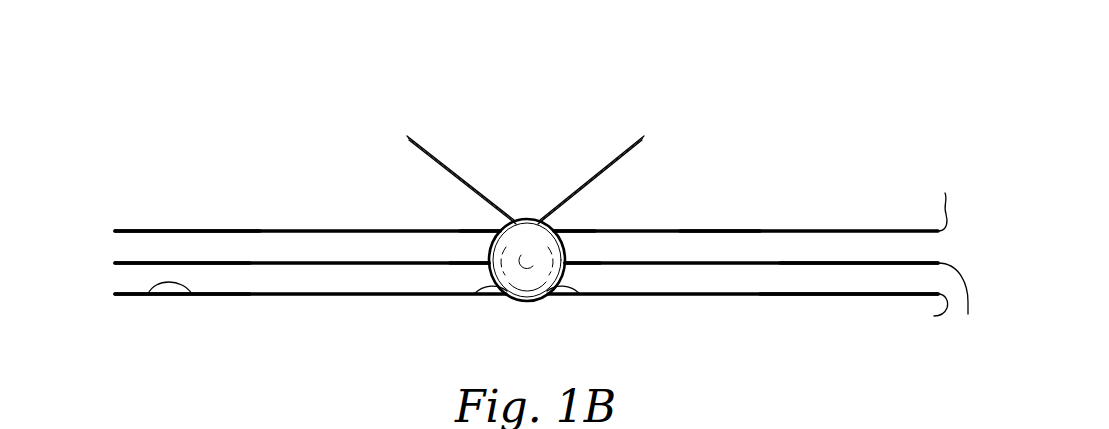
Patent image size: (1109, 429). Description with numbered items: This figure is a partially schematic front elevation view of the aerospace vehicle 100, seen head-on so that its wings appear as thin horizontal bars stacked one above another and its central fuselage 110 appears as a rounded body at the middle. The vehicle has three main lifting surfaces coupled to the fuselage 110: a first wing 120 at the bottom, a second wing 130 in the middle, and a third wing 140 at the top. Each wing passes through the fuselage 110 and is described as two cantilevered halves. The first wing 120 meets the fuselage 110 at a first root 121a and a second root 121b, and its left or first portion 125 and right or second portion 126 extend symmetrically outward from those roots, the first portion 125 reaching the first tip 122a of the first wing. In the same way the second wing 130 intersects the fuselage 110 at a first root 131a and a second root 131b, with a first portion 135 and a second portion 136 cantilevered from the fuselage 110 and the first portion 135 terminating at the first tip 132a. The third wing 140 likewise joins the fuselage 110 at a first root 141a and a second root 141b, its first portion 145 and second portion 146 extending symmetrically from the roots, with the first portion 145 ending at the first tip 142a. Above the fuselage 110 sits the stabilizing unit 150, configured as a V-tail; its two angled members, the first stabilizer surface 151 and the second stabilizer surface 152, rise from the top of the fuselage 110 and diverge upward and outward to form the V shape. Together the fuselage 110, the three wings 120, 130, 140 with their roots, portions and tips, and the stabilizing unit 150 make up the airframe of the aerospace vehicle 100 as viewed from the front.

The aerospace vehicle 100 is at (300, 140).
The fuselage 110 is at (527, 302).
The first wing 120 is at (298, 296).
The first root of the first wing 121a is at (567, 290).
The second root of the first wing 121b is at (490, 294).
The first tip of the first wing 122a is at (934, 316).
The first portion of the first wing 125 is at (795, 294).
The second portion of the first wing 126 is at (148, 294).
The second wing 130 is at (267, 263).
The first root of the second wing 131a is at (568, 263).
The second root of the second wing 131b is at (487, 263).
The first tip of the second wing 132a is at (969, 303).
The first portion of the second wing 135 is at (820, 263).
The second portion of the second wing 136 is at (157, 263).
The third wing 140 is at (290, 231).
The first root of the third wing 141a is at (555, 229).
The second root of the third wing 141b is at (497, 229).
The first tip of the third wing 142a is at (954, 198).
The first portion of the third wing 145 is at (700, 231).
The second portion of the third wing 146 is at (248, 231).
The stabilizing unit 150 is at (572, 162).
The first stabilizer surface 151 is at (643, 138).
The second stabilizer surface 152 is at (408, 138).